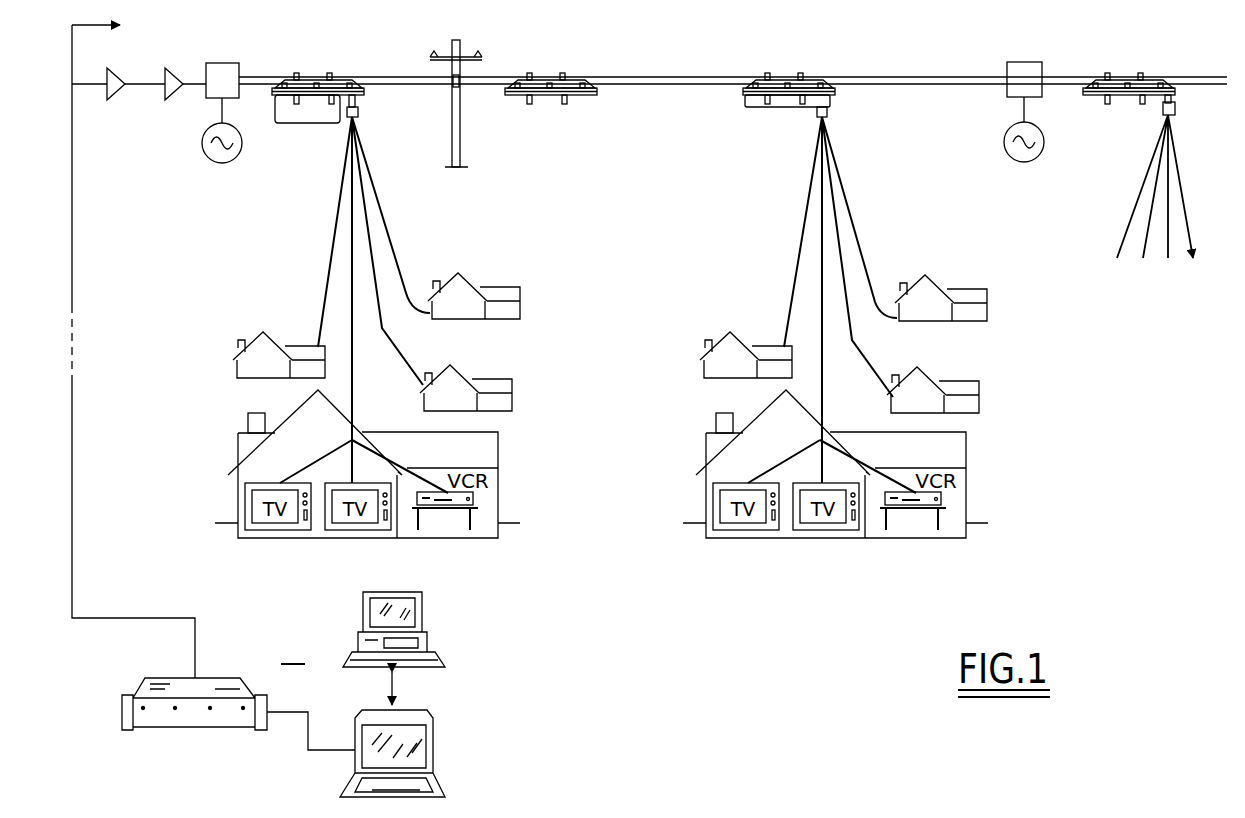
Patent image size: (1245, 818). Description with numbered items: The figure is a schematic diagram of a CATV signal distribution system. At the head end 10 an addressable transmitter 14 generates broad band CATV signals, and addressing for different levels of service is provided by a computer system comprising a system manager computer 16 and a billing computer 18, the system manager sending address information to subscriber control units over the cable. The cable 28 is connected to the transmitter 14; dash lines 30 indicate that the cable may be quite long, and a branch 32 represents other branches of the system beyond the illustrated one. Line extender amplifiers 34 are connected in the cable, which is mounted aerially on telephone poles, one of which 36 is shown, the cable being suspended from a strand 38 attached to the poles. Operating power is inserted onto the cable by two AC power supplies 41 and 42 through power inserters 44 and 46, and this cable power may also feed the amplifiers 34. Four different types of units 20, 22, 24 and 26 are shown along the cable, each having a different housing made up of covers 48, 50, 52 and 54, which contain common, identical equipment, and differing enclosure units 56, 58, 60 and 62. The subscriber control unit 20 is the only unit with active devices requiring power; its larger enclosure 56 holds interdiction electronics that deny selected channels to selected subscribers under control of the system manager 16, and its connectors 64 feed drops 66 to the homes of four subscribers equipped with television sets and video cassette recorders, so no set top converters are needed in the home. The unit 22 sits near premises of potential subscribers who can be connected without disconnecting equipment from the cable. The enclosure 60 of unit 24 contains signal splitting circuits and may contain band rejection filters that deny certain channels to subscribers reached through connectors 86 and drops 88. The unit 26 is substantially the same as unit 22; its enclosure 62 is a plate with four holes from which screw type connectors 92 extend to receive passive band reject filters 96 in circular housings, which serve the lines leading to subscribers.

The head end 10 is at (293, 650).
The addressable transmitter 14 is at (178, 728).
The system manager computer 16 is at (433, 766).
The billing computer 18 is at (424, 621).
The subscriber control unit 20 is at (342, 100).
The unit 22 is at (565, 86).
The unit 24 is at (811, 91).
The unit 26 is at (1153, 178).
The cable 28 is at (85, 84).
The dash lines 30 is at (72, 328).
The branch 32 is at (72, 44).
The line extender amplifiers 34 is at (163, 77).
The telephone pole 36 is at (463, 46).
The strand 38 is at (652, 77).
The AC power supply 41 is at (218, 164).
The AC power supply 42 is at (1027, 163).
The power inserter 44 is at (214, 98).
The power inserter 46 is at (1008, 97).
The cover 48 is at (343, 75).
The cover 50 is at (575, 75).
The cover 52 is at (812, 75).
The cover 54 is at (1165, 75).
The enclosure unit 56 is at (320, 125).
The enclosure unit 58 is at (553, 95).
The enclosure 60 is at (786, 107).
The enclosure plate 62 is at (1130, 95).
The connectors 64 is at (360, 112).
The drops 66 is at (405, 357).
The connectors 86 is at (830, 110).
The drops 88 is at (870, 312).
The connectors 92 is at (1176, 98).
The passive band reject filters 96 is at (1178, 112).